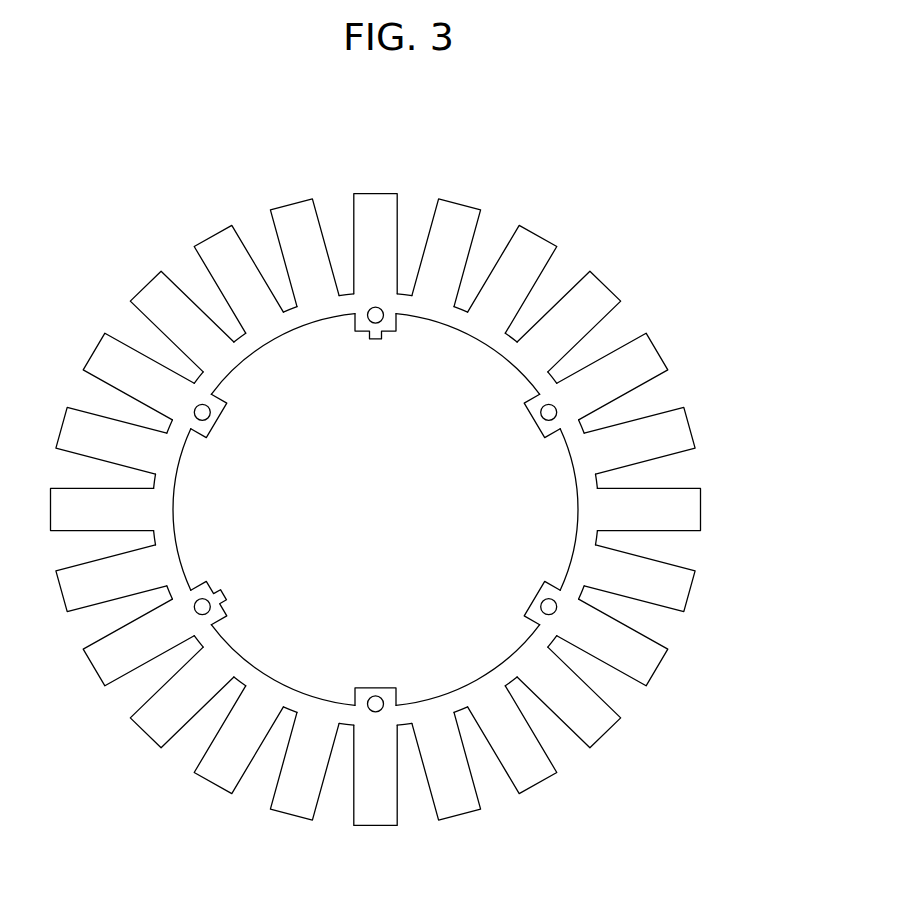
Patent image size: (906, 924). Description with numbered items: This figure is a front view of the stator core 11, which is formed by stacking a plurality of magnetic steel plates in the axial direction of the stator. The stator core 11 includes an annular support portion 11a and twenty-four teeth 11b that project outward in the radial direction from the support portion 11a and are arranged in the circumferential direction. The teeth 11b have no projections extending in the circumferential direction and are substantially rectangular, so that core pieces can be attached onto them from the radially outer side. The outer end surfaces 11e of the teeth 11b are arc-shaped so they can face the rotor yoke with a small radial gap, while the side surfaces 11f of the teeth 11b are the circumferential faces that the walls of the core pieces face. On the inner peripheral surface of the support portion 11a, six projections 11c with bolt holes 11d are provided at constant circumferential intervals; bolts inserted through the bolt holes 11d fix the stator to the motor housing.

The stator core 11 is at (541, 230).
The annular support portion 11a is at (267, 325).
The teeth 11b is at (687, 510).
The projections 11c is at (213, 436).
The bolt holes 11d is at (209, 608).
The outer end surfaces 11e is at (657, 670).
The side surfaces 11f is at (575, 284).